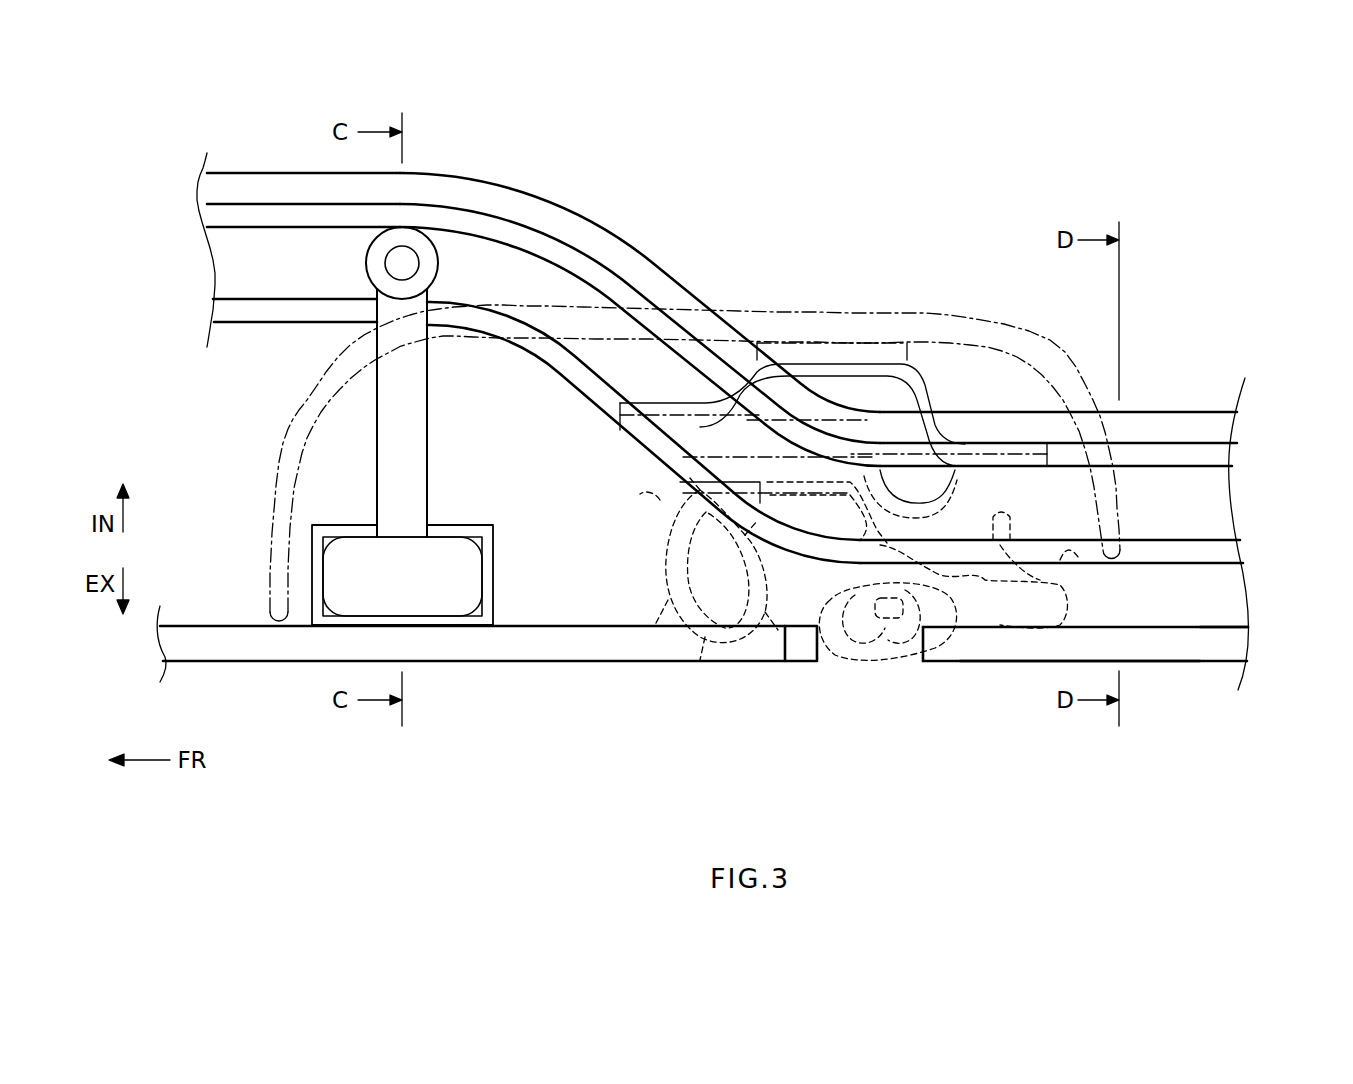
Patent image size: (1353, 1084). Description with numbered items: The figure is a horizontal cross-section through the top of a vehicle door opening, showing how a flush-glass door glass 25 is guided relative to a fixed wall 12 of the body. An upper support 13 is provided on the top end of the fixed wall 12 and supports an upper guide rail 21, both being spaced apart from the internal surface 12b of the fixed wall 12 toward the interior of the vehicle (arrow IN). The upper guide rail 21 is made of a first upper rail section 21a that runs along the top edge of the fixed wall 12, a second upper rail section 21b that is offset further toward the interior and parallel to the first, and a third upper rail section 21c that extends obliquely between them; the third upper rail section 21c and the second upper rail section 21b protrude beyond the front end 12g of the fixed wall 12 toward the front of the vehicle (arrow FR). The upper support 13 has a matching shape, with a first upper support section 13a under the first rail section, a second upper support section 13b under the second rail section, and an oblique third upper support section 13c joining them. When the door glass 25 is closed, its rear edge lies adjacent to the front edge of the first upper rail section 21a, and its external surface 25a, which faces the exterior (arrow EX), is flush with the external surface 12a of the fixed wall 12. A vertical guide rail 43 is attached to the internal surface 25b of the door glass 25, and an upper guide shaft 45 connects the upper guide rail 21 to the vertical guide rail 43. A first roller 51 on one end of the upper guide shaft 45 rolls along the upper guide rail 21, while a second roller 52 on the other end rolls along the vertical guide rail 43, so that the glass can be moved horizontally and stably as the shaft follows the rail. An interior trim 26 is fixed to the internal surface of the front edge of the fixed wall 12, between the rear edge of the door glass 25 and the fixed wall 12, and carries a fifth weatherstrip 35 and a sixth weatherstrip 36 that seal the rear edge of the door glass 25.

The fixed wall 12 is at (1071, 677).
The external surface of the fixed wall 12a is at (1012, 663).
The internal surface of the fixed wall 12b is at (1185, 625).
The front end of the fixed wall 12g is at (914, 650).
The upper support 13 is at (722, 290).
The first upper support section 13a is at (1015, 425).
The second upper support section 13b is at (262, 188).
The third upper support section 13c is at (672, 290).
The upper guide rail 21 is at (762, 371).
The first upper rail section 21a is at (1217, 500).
The second upper rail section 21b is at (266, 290).
The third upper rail section 21c is at (583, 293).
The door glass 25 is at (488, 648).
The external surface of the door glass 25a is at (515, 662).
The internal surface of the door glass 25b is at (563, 625).
The interior trim 26 is at (816, 300).
The fifth weatherstrip 35 is at (845, 655).
The sixth weatherstrip 36 is at (678, 645).
The vertical guide rail 43 is at (318, 553).
The upper guide shaft 45 is at (393, 448).
The first roller 51 is at (378, 258).
The second roller 52 is at (347, 598).